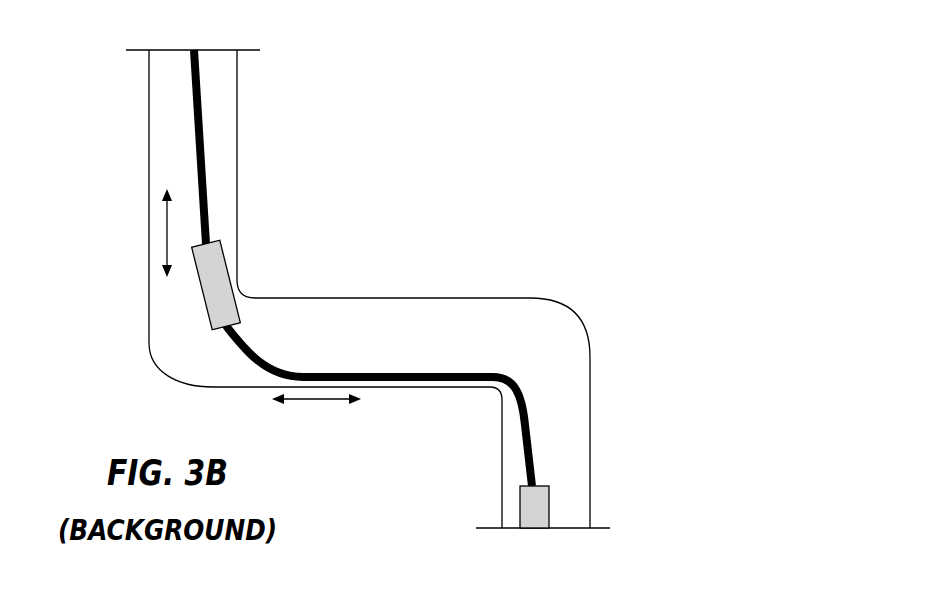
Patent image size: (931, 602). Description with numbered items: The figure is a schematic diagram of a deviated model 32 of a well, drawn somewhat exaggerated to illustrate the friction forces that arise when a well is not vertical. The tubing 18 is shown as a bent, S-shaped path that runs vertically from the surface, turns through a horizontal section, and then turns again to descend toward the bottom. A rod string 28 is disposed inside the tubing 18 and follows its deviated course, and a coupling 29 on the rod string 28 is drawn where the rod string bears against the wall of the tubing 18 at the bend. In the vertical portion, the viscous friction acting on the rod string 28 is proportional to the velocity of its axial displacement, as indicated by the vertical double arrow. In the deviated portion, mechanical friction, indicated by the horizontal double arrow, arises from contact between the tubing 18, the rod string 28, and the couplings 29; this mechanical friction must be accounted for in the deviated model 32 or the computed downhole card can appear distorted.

The tubing 18 is at (149, 148).
The rod string 28 is at (203, 191).
The couplings 29 is at (221, 257).
The deviated model 32 is at (311, 76).